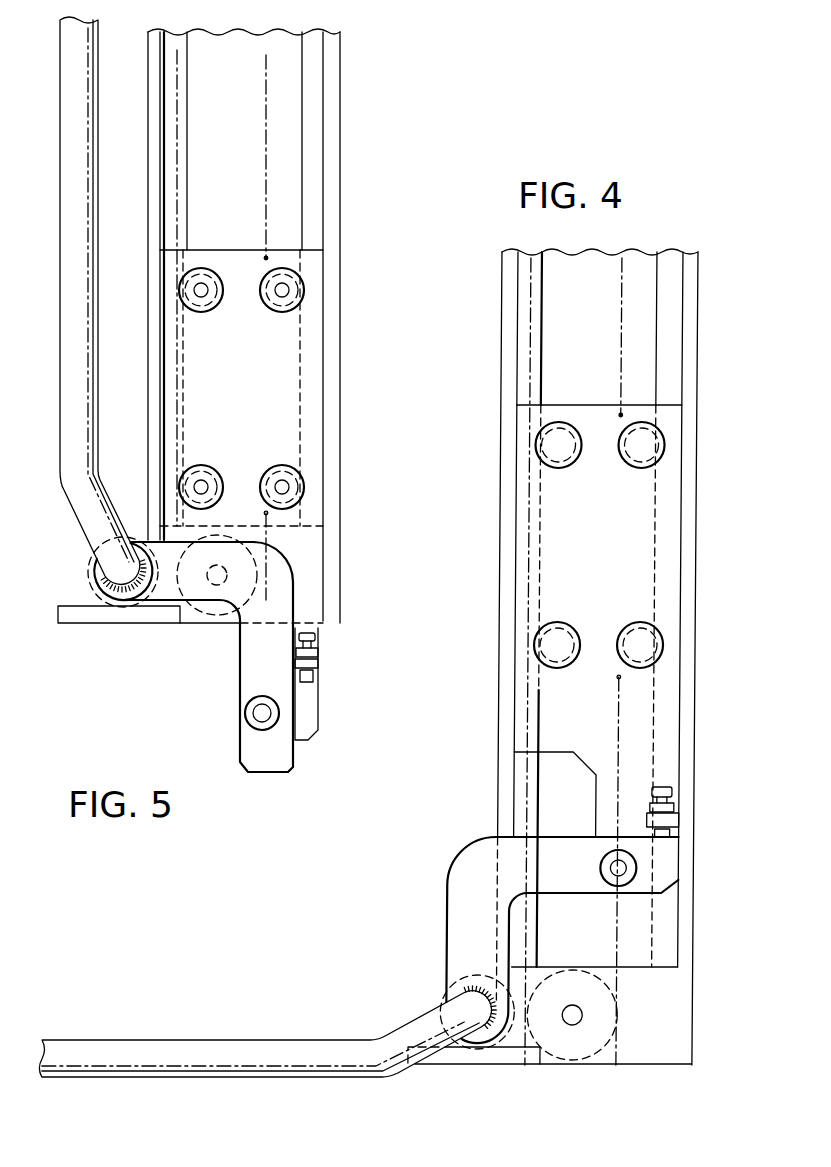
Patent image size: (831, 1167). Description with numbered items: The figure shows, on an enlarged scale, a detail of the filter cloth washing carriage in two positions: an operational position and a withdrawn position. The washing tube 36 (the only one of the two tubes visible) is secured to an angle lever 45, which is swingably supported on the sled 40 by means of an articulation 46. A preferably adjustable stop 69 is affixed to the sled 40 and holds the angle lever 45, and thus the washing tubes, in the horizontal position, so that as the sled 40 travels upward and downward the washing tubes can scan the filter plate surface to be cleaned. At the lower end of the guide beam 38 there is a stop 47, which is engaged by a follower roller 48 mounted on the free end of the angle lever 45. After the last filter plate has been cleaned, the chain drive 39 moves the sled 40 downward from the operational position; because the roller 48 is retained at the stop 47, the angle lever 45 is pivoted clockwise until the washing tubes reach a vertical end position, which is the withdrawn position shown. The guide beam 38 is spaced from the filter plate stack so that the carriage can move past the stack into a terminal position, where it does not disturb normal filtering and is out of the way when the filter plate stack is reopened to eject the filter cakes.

In FIG. 4, the washing tube 36 is at (196, 1050).
In FIG. 5, the washing tube 36 is at (85, 508).
In FIG. 4, the guide beam 38 is at (691, 347).
In FIG. 5, the guide beam 38 is at (340, 103).
In FIG. 4, the chain drive 39 is at (622, 285).
In FIG. 4, the sled 40 is at (672, 508).
In FIG. 5, the sled 40 is at (307, 368).
In FIG. 4, the angle lever 45 is at (472, 886).
In FIG. 5, the angle lever 45 is at (282, 580).
In FIG. 4, the articulation 46 is at (633, 870).
In FIG. 5, the articulation 46 is at (250, 712).
In FIG. 4, the stop 47 is at (464, 1055).
In FIG. 4, the follower roller 48 is at (518, 1030).
In FIG. 4, the adjustable stop 69 is at (682, 821).